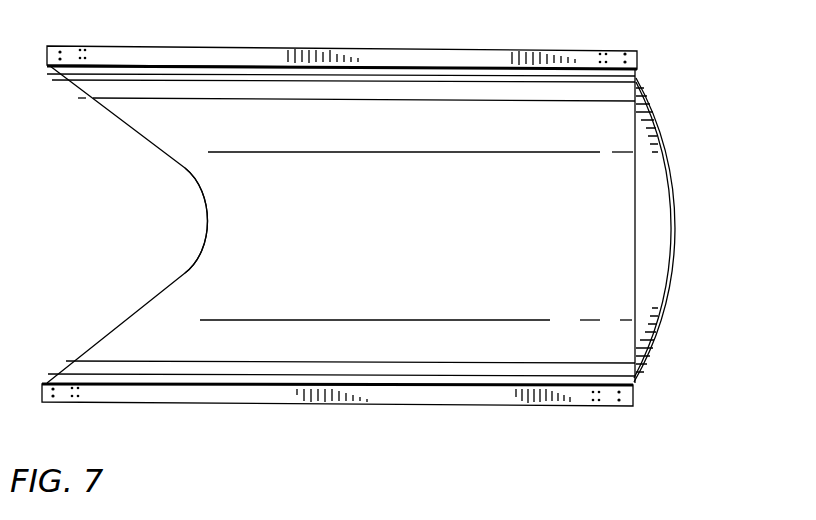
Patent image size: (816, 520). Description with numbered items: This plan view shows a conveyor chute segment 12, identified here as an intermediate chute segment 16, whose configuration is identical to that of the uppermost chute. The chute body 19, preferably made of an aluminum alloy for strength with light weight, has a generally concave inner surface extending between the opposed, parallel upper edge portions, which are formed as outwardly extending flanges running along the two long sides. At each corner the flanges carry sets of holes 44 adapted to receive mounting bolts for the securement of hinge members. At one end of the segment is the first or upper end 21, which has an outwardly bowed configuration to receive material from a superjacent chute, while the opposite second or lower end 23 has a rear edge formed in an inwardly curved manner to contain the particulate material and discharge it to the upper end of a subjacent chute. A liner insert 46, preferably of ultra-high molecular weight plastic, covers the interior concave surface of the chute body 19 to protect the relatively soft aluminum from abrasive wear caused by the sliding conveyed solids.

The chute segment 12 is at (200, 40).
The intermediate chute segment 16 is at (415, 48).
The chute body 19 is at (215, 405).
The upper end 21 is at (676, 243).
The lower end 23 is at (138, 318).
The holes 44 is at (62, 48).
The liner insert 46 is at (402, 254).